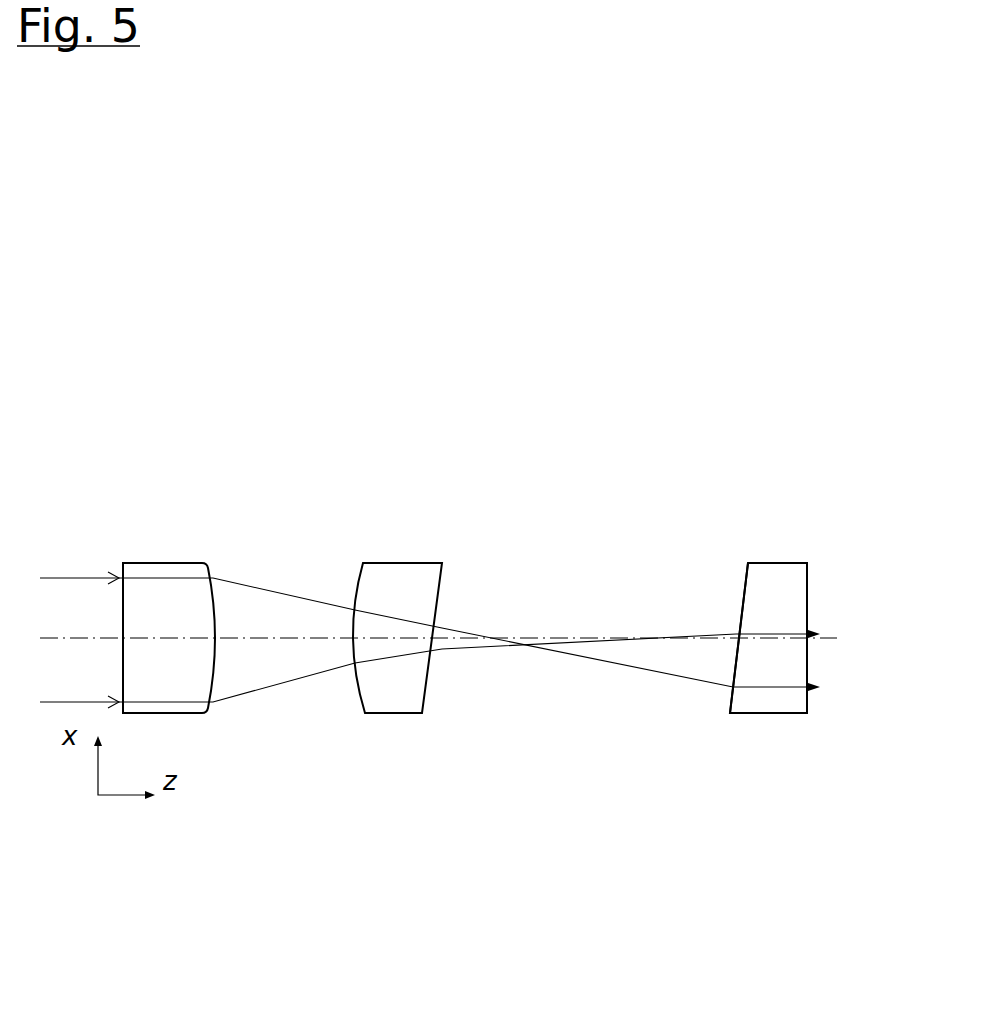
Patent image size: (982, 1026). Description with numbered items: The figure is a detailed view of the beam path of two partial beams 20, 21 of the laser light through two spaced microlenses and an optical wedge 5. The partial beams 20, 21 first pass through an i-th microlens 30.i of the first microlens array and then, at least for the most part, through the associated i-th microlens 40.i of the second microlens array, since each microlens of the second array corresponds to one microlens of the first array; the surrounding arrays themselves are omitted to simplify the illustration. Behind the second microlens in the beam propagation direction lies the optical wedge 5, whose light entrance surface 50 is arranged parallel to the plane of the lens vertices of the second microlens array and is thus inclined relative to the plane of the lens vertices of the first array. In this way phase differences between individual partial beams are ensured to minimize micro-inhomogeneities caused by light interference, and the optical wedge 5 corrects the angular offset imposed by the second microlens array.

The optical wedge 5 is at (782, 593).
The partial beam 20 is at (72, 576).
The partial beam 21 is at (42, 704).
The i-th microlens of the first microlens array 30.i is at (166, 563).
The i-th microlens of the second microlens array 40.i is at (408, 702).
The light entrance surface 50 is at (743, 593).